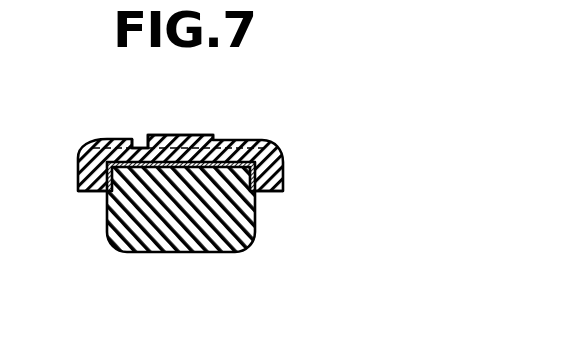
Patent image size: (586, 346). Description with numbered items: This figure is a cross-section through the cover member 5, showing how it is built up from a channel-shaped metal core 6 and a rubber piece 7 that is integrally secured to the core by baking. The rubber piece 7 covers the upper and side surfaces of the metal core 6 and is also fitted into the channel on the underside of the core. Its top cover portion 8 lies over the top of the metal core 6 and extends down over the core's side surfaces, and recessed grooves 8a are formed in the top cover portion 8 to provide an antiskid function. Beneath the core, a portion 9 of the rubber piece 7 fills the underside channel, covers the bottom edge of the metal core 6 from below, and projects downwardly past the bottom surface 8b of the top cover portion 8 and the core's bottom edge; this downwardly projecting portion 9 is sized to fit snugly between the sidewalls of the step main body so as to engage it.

The cover member 5 is at (202, 189).
The metal core 6 is at (218, 161).
The rubber piece 7 is at (264, 139).
The top cover portion 8 is at (190, 135).
The recessed grooves 8a is at (138, 142).
The bottom surface 8b is at (90, 191).
The downwardly projecting portion 9 is at (187, 253).